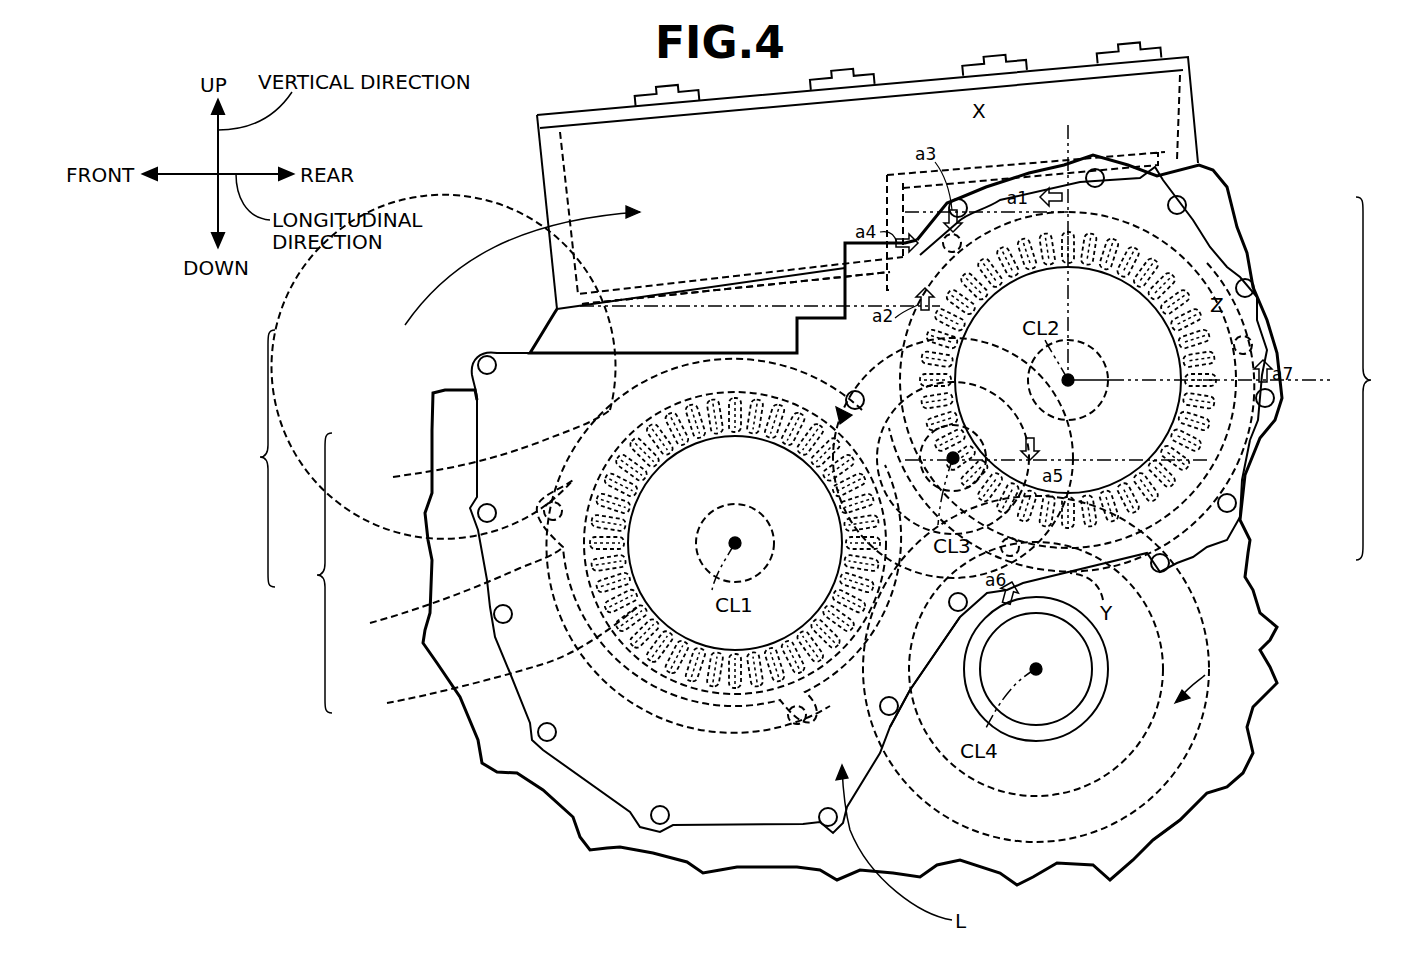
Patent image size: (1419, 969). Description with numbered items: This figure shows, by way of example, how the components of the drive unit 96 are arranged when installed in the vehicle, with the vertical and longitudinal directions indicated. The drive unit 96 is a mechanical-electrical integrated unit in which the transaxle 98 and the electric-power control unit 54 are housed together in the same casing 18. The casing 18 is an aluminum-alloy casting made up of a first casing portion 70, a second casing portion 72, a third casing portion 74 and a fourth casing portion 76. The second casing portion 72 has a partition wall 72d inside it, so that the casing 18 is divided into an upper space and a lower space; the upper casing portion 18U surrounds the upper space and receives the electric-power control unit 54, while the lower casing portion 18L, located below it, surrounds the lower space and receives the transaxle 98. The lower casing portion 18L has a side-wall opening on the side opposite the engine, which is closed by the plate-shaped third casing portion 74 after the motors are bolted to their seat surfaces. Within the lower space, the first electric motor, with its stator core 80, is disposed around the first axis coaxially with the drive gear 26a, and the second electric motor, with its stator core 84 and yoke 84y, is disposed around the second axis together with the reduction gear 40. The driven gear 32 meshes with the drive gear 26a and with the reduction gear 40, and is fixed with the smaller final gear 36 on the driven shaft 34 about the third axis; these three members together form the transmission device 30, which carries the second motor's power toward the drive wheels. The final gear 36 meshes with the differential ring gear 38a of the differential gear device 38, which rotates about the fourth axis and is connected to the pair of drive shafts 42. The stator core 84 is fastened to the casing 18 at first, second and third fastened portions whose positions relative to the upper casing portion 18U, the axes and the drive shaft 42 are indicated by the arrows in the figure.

The casing 18 is at (755, 878).
The upper casing portion 18U is at (1192, 125).
The lower casing portion 18L is at (1218, 200).
The drive gear 26a is at (492, 660).
The transmission device 30 is at (587, 459).
The driven gear 32 is at (885, 385).
The driven shaft 34 is at (965, 440).
The final gear 36 is at (815, 455).
The differential gear device 38 is at (1245, 780).
The differential ring gear 38a is at (1187, 583).
The reduction gear 40 is at (1225, 418).
The drive shafts 42 is at (1025, 740).
The electric-power control unit 54 is at (512, 278).
The first casing portion 70 is at (1000, 880).
The second casing portion 72 is at (535, 200).
The partition wall 72d is at (744, 290).
The third casing portion 74 is at (920, 690).
The fourth casing portion 76 is at (1165, 65).
The stator core 80 is at (451, 592).
The stator core 84 is at (1207, 263).
The yoke 84y is at (1232, 440).
The drive unit 96 is at (250, 458).
The transaxle 98 is at (841, 455).